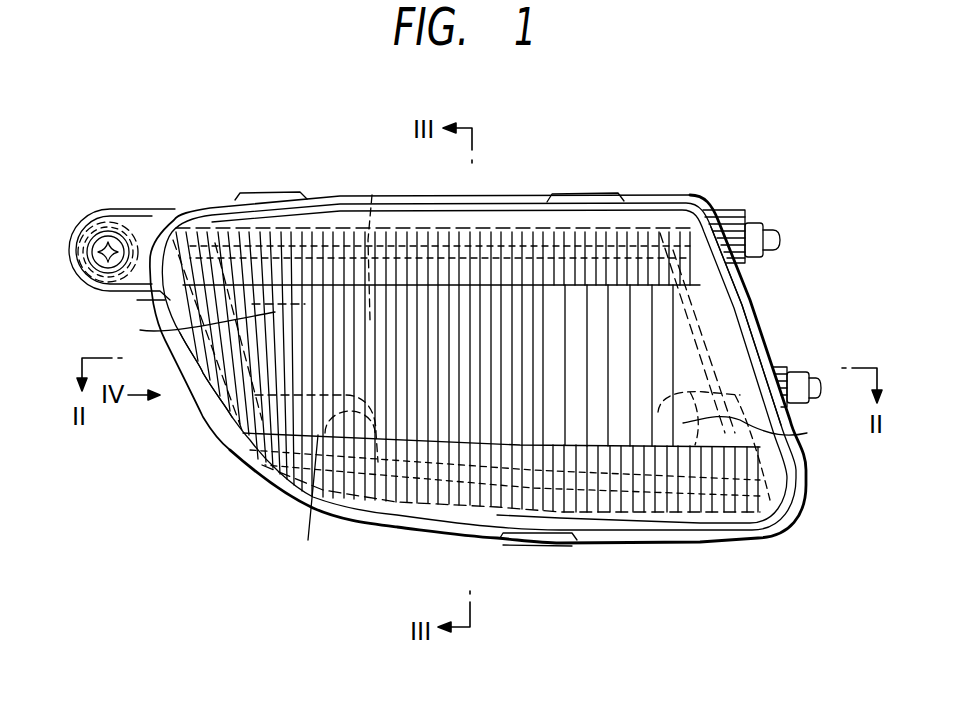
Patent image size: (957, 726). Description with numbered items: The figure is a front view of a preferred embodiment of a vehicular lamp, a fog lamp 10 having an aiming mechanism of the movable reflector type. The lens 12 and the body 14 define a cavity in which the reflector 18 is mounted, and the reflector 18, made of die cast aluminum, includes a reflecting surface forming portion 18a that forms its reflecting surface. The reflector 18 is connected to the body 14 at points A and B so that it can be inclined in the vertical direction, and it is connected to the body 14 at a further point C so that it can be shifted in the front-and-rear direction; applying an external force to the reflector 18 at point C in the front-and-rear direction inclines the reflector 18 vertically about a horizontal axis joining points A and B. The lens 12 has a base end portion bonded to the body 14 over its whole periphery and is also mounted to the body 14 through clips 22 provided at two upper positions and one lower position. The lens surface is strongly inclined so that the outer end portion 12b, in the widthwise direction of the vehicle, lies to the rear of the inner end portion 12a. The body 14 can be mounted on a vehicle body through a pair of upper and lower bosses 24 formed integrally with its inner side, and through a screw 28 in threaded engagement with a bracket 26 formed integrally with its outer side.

The fog lamp 10 is at (463, 360).
The lens 12 is at (475, 369).
The inner end portion 12a is at (707, 333).
The outer end portion 12b is at (203, 373).
The body 14 is at (818, 522).
The reflector 18 is at (640, 495).
The reflecting surface forming portion 18a is at (372, 195).
The clips 22 is at (258, 190).
The bosses 24 is at (778, 233).
The bracket 26 is at (122, 206).
The screw 28 is at (123, 243).
The point A is at (306, 503).
The point B is at (756, 433).
The point C is at (198, 328).